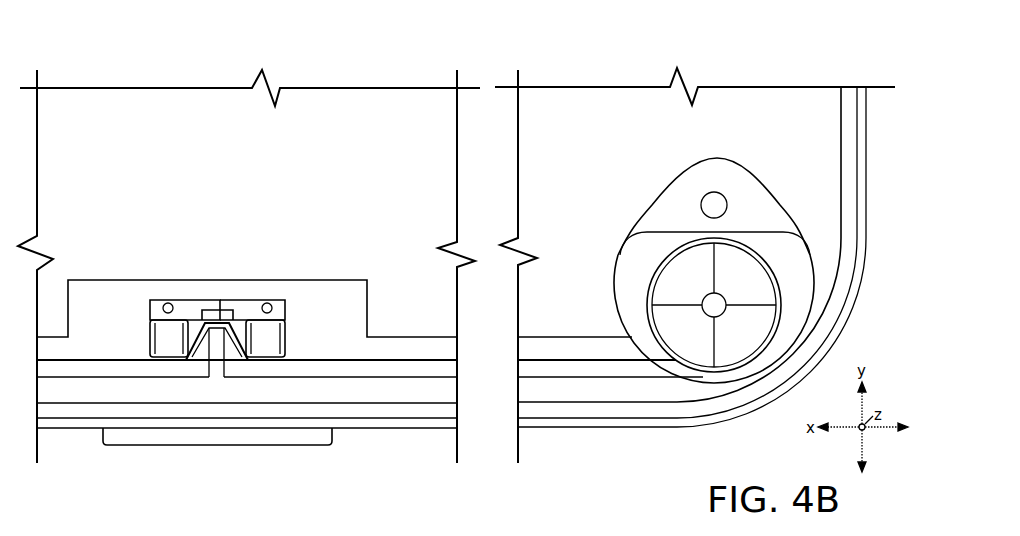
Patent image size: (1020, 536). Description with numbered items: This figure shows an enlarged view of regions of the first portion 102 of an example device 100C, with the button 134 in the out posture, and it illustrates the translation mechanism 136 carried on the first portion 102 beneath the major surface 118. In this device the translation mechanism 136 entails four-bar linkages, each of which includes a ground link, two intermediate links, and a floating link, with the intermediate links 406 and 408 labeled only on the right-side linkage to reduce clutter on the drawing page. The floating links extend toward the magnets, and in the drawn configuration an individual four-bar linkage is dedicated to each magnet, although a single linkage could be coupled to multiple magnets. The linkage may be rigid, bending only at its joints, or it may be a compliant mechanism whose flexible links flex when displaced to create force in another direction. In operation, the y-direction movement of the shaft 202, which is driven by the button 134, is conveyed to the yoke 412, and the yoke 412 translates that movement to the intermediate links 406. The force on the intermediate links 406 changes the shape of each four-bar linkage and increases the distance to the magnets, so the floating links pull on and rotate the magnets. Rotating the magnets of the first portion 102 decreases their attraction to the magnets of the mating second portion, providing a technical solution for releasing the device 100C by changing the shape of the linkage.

The device 100C is at (196, 46).
The major surface 118 is at (250, 108).
The translation mechanism 136 is at (158, 191).
The intermediate link 406 is at (255, 323).
The intermediate link 408 is at (286, 340).
The yoke 412 is at (208, 322).
The shaft 202 is at (222, 378).
The button 134 is at (283, 446).
The first portion 102 is at (803, 80).